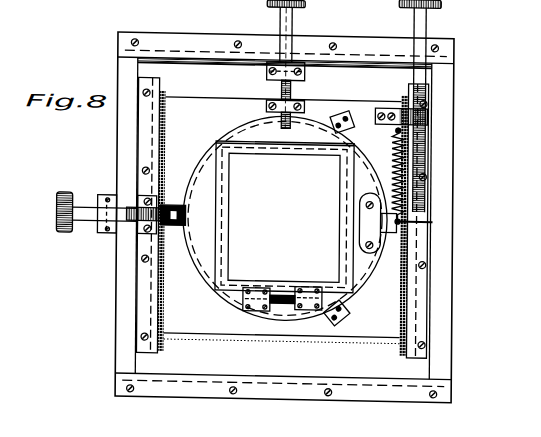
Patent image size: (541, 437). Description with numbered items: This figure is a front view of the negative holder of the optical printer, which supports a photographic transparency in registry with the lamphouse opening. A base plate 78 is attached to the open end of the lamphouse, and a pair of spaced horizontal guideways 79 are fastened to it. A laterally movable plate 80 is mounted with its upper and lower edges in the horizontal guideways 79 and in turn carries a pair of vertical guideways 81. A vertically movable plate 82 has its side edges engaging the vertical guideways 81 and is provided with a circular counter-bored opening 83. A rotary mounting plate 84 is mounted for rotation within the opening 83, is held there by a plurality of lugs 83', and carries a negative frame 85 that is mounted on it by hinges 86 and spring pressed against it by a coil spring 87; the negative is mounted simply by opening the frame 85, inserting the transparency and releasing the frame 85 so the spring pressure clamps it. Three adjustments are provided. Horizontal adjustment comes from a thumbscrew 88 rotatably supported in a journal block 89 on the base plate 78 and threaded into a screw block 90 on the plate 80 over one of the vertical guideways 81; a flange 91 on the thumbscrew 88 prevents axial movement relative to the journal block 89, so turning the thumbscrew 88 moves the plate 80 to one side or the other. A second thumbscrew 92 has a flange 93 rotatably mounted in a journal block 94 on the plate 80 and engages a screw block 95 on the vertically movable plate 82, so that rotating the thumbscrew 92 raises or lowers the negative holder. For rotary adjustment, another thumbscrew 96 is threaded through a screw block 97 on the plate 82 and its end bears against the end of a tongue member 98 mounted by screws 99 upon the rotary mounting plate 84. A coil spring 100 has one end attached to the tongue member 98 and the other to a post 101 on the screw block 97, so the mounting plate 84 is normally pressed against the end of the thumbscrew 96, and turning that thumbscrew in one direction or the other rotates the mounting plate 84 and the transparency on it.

The base plate 78 is at (119, 136).
The horizontal guideways 79 is at (350, 40).
The laterally movable plate 80 is at (187, 61).
The vertical guideways 81 is at (145, 270).
The vertically movable plate 82 is at (290, 218).
The circular counter-bored opening 83 is at (286, 104).
The lugs 83' is at (277, 267).
The rotary mounting plate 84 is at (316, 126).
The negative frame 85 is at (214, 171).
The hinges 86 is at (257, 307).
The coil spring 87 is at (295, 305).
The thumbscrew 88 is at (79, 208).
The journal block 89 is at (109, 198).
The screw block 90 is at (156, 204).
The flange 91 is at (102, 222).
The second thumbscrew 92 is at (280, 9).
The flange 93 is at (289, 66).
The journal block 94 is at (303, 72).
The screw block 95 is at (272, 97).
The thumbscrew 96 is at (425, 16).
The screw block 97 is at (386, 102).
The tongue member 98 is at (429, 222).
The screws 99 is at (374, 191).
The coil spring 100 is at (399, 164).
The post 101 is at (399, 128).